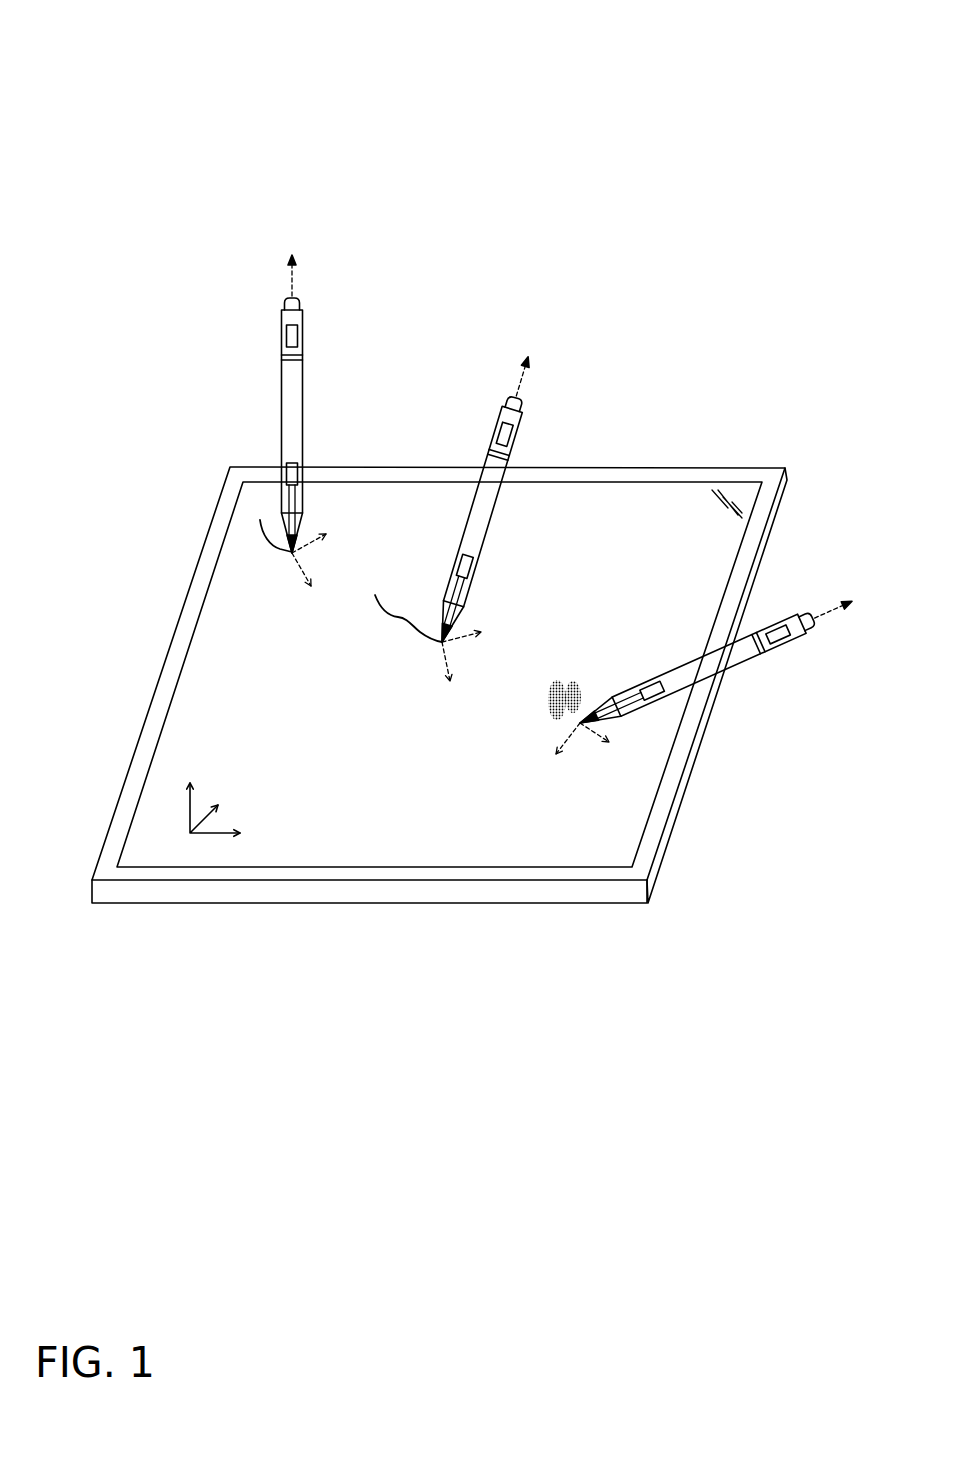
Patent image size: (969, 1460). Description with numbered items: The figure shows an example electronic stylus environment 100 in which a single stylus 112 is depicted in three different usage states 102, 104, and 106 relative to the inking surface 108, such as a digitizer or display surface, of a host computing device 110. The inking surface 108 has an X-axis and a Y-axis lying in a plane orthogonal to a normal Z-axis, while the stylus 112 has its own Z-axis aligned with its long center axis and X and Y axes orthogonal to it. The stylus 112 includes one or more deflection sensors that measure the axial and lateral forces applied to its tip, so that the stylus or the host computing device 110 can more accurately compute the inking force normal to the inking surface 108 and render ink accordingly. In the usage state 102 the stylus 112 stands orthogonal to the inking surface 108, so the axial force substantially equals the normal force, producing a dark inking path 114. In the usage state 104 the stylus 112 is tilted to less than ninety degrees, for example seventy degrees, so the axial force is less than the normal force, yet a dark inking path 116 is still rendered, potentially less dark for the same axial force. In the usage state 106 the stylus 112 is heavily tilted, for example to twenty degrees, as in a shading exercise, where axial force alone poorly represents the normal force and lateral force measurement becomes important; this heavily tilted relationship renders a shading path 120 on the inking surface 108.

The electronic stylus environment 100 is at (130, 71).
The usage state 102 is at (313, 207).
The usage state 104 is at (545, 293).
The usage state 106 is at (841, 473).
The inking surface 108 is at (367, 810).
The host computing device 110 is at (437, 731).
The stylus 112 is at (520, 460).
The dark inking path 114 is at (252, 497).
The dark inking path 116 is at (380, 634).
The shading path 120 is at (538, 733).